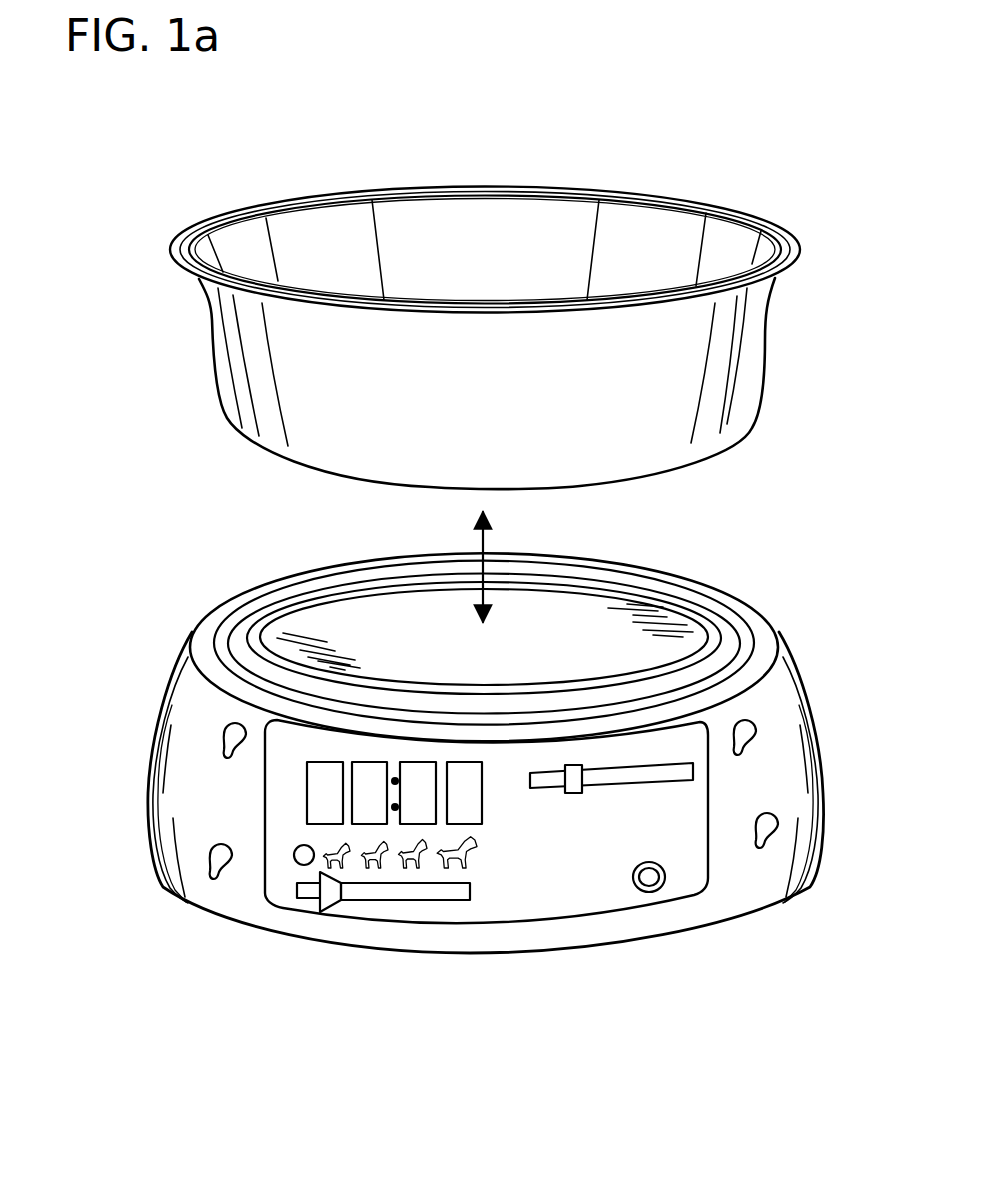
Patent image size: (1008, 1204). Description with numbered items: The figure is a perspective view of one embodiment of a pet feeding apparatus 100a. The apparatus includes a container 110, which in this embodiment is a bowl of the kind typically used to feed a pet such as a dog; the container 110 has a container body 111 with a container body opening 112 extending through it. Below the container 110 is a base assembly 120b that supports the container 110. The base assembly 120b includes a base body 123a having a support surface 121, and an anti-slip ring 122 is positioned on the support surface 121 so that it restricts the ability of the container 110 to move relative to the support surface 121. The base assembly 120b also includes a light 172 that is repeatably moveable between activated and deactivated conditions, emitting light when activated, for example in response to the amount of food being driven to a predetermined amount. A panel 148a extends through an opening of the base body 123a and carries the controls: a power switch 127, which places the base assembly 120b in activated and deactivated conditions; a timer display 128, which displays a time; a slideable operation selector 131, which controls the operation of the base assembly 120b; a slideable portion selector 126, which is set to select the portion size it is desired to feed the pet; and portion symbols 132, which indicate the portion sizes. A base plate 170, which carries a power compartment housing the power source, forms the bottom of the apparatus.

The pet feeding apparatus 100a is at (160, 166).
The container 110 is at (128, 305).
The container body 111 is at (226, 374).
The container body opening 112 is at (490, 222).
The base assembly 120b is at (112, 710).
The support surface 121 is at (333, 627).
The anti-slip ring 122 is at (713, 638).
The base body 123a is at (162, 806).
The slideable portion selector 126 is at (305, 919).
The power switch 127 is at (628, 922).
The timer display 128 is at (290, 805).
The slideable operation selector 131 is at (583, 808).
The portion symbols 132 is at (480, 865).
The panel 148a is at (695, 885).
The base plate 170 is at (458, 977).
The light 172 is at (776, 828).